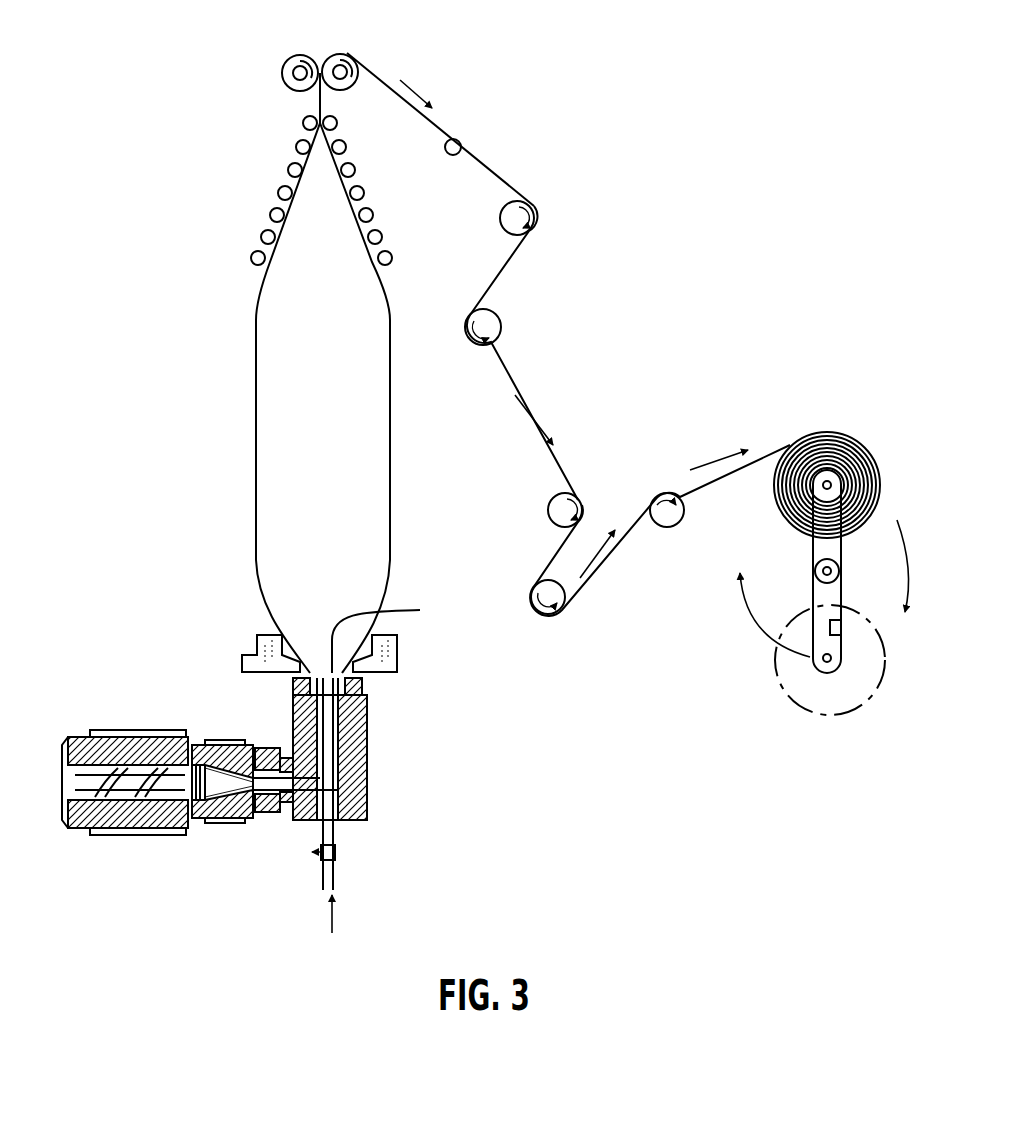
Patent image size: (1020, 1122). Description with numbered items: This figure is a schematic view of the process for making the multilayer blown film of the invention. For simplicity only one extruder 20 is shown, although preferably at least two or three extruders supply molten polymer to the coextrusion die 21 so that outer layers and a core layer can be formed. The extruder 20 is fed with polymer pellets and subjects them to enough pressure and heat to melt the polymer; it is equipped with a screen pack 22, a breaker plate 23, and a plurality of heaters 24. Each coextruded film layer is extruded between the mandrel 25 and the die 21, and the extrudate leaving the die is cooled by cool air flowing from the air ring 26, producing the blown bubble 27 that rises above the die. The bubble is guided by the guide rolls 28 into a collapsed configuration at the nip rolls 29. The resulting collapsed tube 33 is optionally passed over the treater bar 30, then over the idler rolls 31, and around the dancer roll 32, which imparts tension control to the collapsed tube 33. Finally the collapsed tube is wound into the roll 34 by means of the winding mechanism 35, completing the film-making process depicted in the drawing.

The extruder 20 is at (120, 725).
The coextrusion die 21 is at (363, 685).
The screen pack 22 is at (207, 747).
The breaker plate 23 is at (197, 830).
The heaters 24 is at (103, 838).
The mandrel 25 is at (332, 673).
The air ring 26 is at (255, 640).
The tubular film bubble 27 is at (255, 392).
The guide rolls 28 is at (260, 258).
The nip rolls 29 is at (335, 50).
The treater bar 30 is at (460, 140).
The idler rolls 31 is at (503, 320).
The dancer roll 32 is at (570, 602).
The collapsed tube 33 is at (320, 100).
The roll 34 is at (863, 533).
The winding mechanism 35 is at (810, 572).